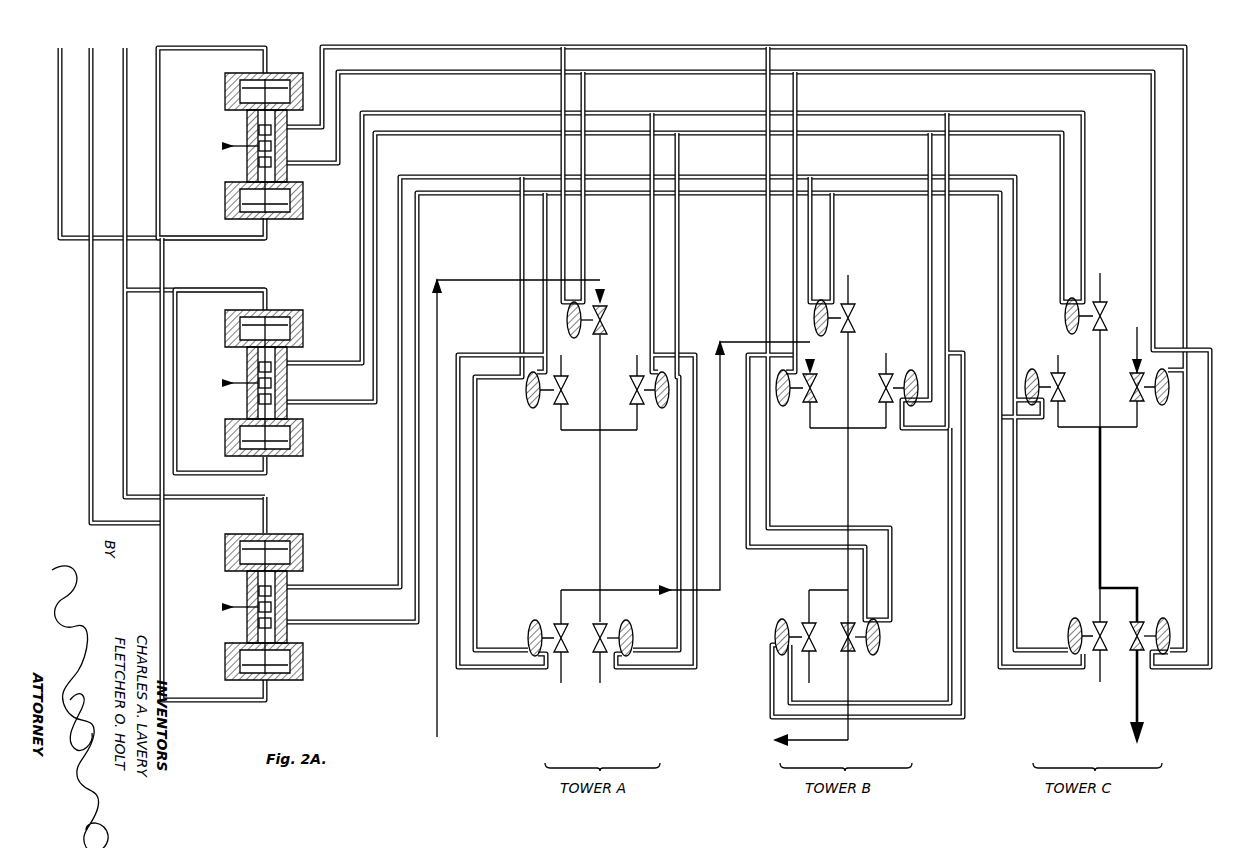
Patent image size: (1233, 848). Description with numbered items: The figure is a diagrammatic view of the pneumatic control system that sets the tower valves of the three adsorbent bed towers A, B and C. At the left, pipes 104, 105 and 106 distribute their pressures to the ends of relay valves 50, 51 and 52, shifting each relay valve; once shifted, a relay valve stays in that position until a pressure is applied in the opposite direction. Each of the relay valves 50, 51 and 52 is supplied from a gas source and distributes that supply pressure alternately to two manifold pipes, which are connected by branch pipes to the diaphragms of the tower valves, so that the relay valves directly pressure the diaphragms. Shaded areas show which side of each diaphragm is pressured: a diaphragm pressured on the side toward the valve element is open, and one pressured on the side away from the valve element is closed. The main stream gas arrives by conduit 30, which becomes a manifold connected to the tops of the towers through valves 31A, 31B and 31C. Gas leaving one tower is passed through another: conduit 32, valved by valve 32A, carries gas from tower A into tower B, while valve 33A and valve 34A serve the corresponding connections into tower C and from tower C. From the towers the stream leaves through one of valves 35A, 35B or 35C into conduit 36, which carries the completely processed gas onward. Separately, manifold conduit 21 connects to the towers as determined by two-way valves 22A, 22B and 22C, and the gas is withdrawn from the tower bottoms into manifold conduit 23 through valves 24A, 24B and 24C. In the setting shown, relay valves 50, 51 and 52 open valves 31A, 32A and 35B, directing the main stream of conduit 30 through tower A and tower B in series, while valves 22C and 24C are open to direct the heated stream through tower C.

The pipe 104 is at (58, 62).
The pipe 105 is at (90, 62).
The pipe 106 is at (122, 56).
The relay valve 50 is at (300, 73).
The relay valve 51 is at (298, 310).
The relay valve 52 is at (305, 524).
The conduit 30 is at (438, 731).
The valve 31A is at (606, 318).
The two-way valve 22A is at (558, 406).
The valve 34A is at (639, 406).
The valve 24A is at (558, 623).
The valve 35A is at (603, 623).
The conduit 32 is at (721, 586).
The valve 32A is at (810, 404).
The valve 31B is at (852, 316).
The two-way valve 22B is at (886, 373).
The valve 24B is at (806, 622).
The valve 35B is at (852, 651).
The conduit 36 is at (818, 742).
The valve 31C is at (1104, 316).
The valve 33A is at (1054, 374).
The conduit 21 is at (1137, 356).
The two-way valve 22C is at (1145, 403).
The valve 35C is at (1098, 652).
The valve 24C is at (1141, 623).
The conduit 23 is at (1139, 701).